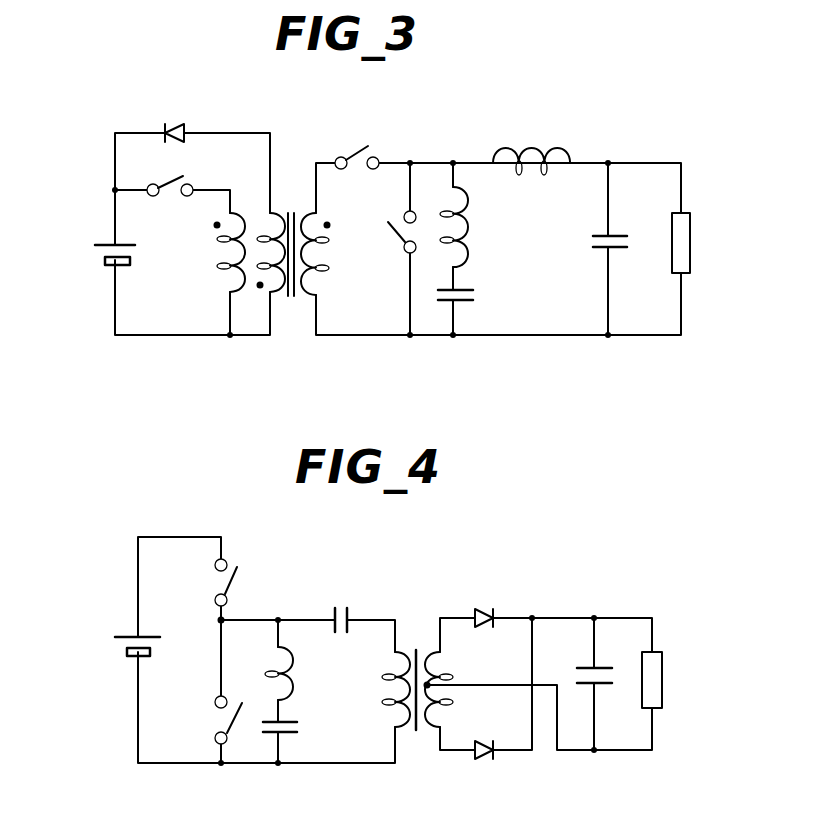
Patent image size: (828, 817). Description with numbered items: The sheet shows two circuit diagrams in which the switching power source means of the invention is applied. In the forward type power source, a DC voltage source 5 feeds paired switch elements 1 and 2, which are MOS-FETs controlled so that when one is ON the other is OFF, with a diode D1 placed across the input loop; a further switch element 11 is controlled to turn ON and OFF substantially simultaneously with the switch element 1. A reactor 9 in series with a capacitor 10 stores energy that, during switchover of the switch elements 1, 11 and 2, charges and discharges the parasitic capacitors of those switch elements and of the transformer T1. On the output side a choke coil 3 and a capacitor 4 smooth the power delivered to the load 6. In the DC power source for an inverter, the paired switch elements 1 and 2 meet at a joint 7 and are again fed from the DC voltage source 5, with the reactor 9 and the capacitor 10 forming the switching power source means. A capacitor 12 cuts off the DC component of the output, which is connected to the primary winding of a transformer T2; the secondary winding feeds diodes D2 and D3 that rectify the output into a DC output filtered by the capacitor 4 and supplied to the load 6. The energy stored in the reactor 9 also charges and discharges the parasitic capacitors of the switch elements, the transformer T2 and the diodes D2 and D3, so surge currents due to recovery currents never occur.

In FIG. 3, the switch element 1 is at (170, 194).
In FIG. 4, the switch element 1 is at (217, 582).
In FIG. 3, the switch element 2 is at (392, 239).
In FIG. 4, the switch element 2 is at (218, 719).
In FIG. 3, the choke coil 3 is at (542, 138).
In FIG. 3, the capacitor 4 is at (617, 232).
In FIG. 4, the capacitor 4 is at (606, 670).
In FIG. 3, the DC voltage source 5 is at (110, 239).
In FIG. 4, the DC voltage source 5 is at (127, 636).
In FIG. 3, the load 6 is at (692, 237).
In FIG. 4, the load 6 is at (664, 676).
In FIG. 4, the joint 7 is at (229, 614).
In FIG. 3, the reactor 9 is at (470, 222).
In FIG. 4, the reactor 9 is at (293, 686).
In FIG. 3, the capacitor 10 is at (474, 290).
In FIG. 4, the capacitor 10 is at (296, 728).
In FIG. 3, the switch element 11 is at (356, 149).
In FIG. 4, the capacitor 12 is at (338, 606).
In FIG. 3, the diode D1 is at (177, 124).
In FIG. 4, the diode D2 is at (484, 610).
In FIG. 4, the diode D3 is at (484, 742).
In FIG. 3, the transformer T1 is at (290, 209).
In FIG. 4, the transformer T2 is at (414, 647).